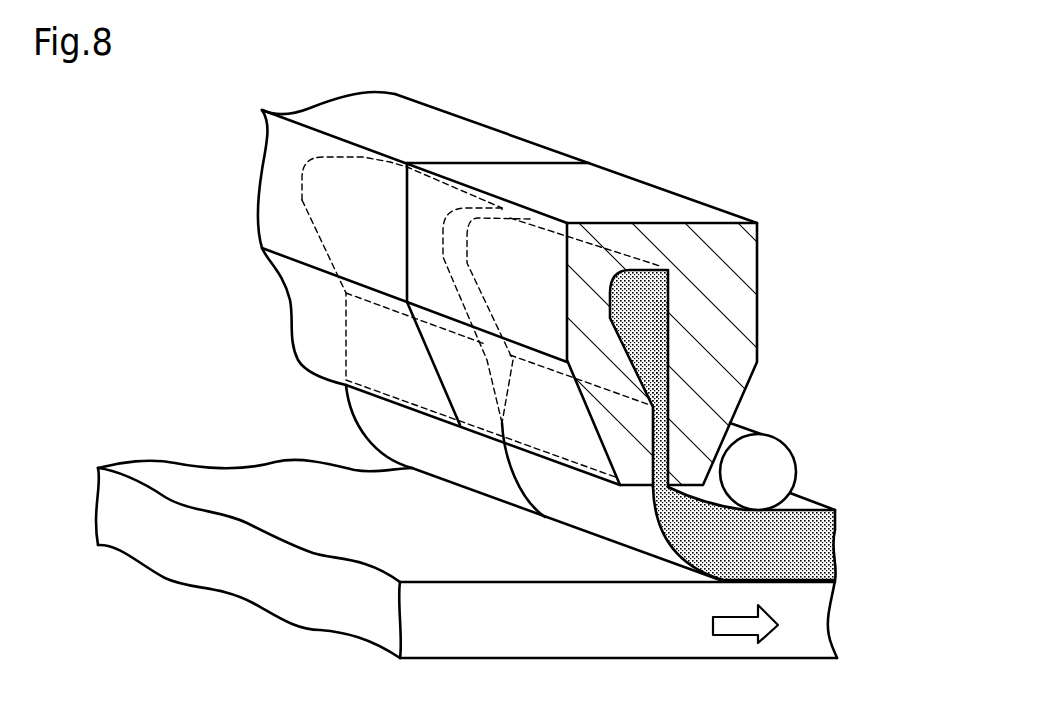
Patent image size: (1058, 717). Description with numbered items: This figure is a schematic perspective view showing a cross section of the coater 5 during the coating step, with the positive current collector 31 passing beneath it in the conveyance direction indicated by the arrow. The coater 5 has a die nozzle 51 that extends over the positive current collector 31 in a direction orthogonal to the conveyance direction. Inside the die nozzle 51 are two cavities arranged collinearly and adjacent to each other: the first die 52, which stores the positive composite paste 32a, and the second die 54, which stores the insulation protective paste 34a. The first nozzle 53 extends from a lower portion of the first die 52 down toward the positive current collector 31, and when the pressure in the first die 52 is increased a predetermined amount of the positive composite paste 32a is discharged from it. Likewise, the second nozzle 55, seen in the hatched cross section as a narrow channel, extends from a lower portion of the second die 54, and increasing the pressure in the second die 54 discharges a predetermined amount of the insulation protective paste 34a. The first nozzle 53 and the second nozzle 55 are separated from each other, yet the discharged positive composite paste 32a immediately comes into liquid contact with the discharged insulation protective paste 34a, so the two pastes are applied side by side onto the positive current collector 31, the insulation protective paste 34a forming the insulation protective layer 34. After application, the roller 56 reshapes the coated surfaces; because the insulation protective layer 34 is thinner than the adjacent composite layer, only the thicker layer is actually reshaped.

The coater 5 is at (227, 146).
The die nozzle 51 is at (317, 103).
The first die 52 is at (372, 178).
The first nozzle 53 is at (424, 398).
The second die 54 is at (530, 237).
The second nozzle 55 is at (660, 492).
The roller 56 is at (773, 463).
The positive current collector 31 is at (828, 630).
The positive composite paste 32a is at (470, 478).
The insulation protective layer 34 is at (828, 551).
The insulation protective paste 34a is at (583, 513).